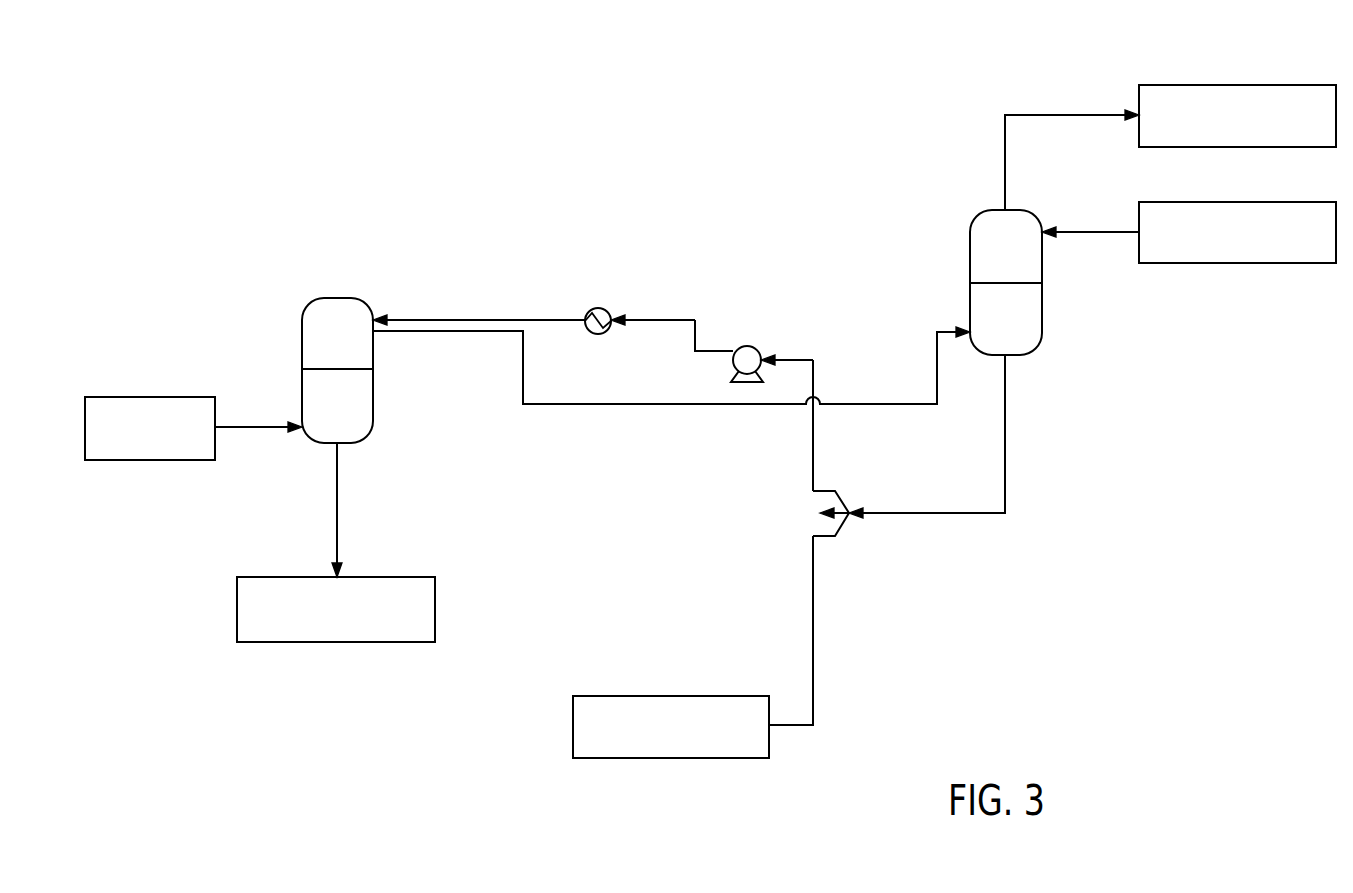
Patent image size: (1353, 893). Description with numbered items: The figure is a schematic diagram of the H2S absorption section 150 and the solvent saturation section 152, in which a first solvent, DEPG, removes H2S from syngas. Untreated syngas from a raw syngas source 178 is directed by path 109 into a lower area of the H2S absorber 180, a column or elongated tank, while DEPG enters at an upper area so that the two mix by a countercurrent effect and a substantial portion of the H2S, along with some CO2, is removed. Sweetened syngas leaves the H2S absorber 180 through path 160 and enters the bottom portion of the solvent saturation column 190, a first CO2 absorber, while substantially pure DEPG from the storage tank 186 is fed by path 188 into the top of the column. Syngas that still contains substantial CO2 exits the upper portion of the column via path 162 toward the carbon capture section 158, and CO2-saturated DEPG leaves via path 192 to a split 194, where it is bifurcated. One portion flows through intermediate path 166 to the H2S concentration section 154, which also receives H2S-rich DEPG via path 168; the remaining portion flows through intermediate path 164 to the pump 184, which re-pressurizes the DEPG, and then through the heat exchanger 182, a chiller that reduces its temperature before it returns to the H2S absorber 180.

The H2S absorption section 150 is at (641, 117).
The solvent saturation section 152 is at (1093, 68).
The H2S concentration section 154 is at (385, 577).
The carbon capture section 158 is at (1288, 85).
The path 109 is at (230, 427).
The path 160 is at (600, 404).
The path 162 is at (1028, 115).
The intermediate path 164 is at (813, 450).
The intermediate path 166 is at (813, 628).
The path 168 is at (352, 498).
The raw syngas source 178 is at (177, 397).
The H2S absorber 180 is at (343, 297).
The heat exchanger 182 is at (603, 307).
The pump 184 is at (748, 350).
The storage tank 186 is at (1288, 202).
The path 188 is at (1073, 232).
The solvent saturation column 190 is at (1020, 210).
The path 192 is at (1005, 455).
The split 194 is at (843, 497).